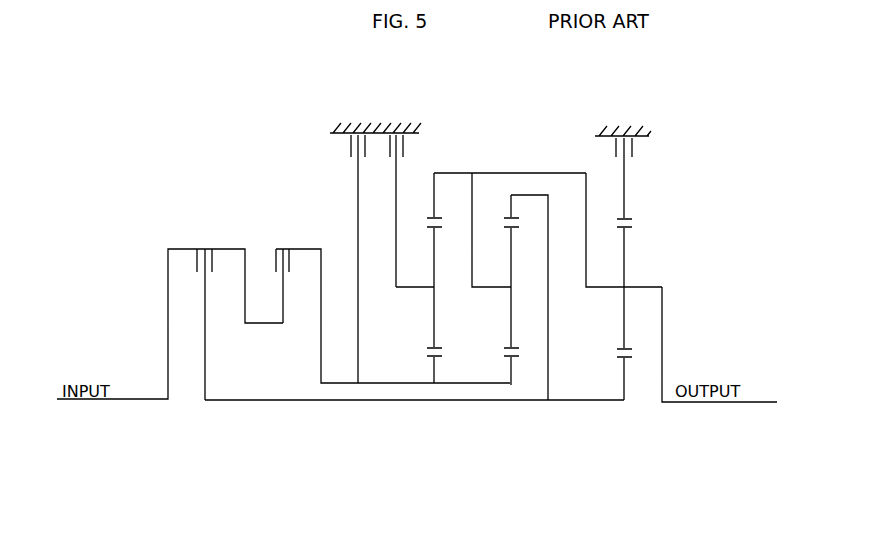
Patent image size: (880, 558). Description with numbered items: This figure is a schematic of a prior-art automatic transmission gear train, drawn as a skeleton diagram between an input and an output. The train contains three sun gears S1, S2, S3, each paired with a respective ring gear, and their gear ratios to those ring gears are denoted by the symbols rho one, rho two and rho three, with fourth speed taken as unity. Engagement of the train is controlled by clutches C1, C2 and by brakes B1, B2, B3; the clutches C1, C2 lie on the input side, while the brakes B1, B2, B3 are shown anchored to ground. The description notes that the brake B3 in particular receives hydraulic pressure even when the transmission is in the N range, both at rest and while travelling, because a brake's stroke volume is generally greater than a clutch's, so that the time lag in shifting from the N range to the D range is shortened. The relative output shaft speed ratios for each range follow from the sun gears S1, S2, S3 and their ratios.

The first clutch C1 is at (205, 313).
The second clutch C2 is at (286, 275).
The first brake B1 is at (339, 259).
The second brake B2 is at (416, 211).
The brake B3 is at (646, 212).
The sun gear S1 is at (436, 368).
The sun gear S2 is at (513, 368).
The sun gear S3 is at (625, 380).